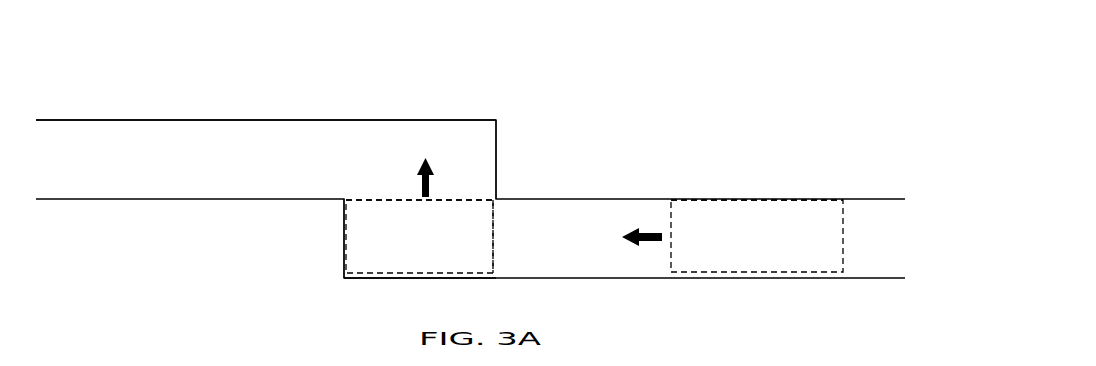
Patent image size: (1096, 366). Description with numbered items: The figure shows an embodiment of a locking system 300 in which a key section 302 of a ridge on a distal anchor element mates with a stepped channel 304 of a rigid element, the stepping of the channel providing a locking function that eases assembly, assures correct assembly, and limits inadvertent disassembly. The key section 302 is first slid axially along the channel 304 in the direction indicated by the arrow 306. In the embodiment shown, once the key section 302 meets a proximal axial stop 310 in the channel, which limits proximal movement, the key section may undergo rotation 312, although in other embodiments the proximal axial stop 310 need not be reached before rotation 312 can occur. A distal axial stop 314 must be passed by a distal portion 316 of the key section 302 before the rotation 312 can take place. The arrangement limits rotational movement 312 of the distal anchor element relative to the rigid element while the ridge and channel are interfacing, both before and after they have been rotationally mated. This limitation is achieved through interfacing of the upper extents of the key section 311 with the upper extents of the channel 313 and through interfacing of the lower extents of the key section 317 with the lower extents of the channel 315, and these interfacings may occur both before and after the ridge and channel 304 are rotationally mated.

The locking system 300 is at (540, 58).
The key section 302 is at (443, 257).
The channel 304 is at (164, 160).
The arrow 306 is at (641, 230).
The proximal axial stop 310 is at (344, 232).
The upper extents of the key section 311 is at (381, 188).
The rotation 312 is at (430, 178).
The upper extents of the channel 313 is at (429, 109).
The distal axial stop 314 is at (497, 186).
The lower extents of the channel 315 is at (208, 210).
The distal portion 316 is at (494, 243).
The lower extents of the key section 317 is at (358, 284).